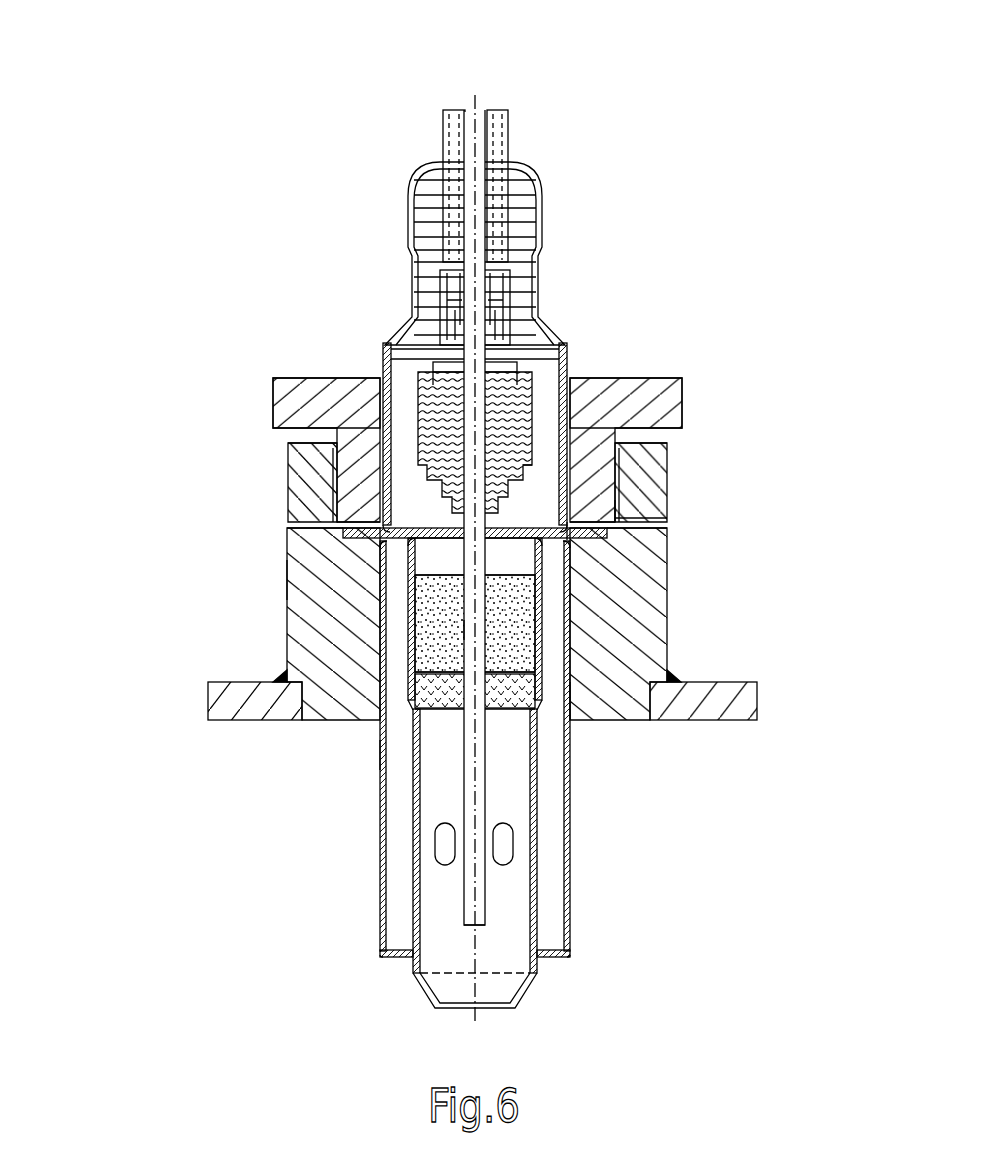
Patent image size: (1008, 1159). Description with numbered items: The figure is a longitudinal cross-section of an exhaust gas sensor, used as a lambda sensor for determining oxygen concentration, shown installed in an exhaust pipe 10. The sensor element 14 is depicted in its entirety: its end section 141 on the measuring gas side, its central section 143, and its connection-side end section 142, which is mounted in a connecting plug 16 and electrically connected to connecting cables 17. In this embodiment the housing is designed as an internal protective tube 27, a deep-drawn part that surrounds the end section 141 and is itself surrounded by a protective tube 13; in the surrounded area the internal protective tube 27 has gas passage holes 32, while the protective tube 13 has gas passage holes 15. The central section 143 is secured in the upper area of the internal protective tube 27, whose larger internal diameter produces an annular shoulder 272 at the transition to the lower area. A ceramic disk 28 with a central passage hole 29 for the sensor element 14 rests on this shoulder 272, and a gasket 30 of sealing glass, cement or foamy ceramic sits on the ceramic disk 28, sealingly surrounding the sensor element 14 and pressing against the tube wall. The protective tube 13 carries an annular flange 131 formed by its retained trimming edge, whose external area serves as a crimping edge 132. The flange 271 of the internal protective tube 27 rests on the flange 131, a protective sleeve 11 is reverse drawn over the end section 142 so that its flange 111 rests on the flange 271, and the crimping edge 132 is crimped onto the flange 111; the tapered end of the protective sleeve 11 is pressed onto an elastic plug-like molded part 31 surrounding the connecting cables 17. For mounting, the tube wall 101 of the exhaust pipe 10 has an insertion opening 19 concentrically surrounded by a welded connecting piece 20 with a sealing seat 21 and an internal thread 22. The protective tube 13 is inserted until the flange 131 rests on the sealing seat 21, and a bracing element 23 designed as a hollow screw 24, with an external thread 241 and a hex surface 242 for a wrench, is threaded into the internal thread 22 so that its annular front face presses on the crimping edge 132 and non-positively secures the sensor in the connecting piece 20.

The exhaust pipe 10 is at (252, 832).
The protective sleeve 11 is at (572, 350).
The protective tube 13 is at (377, 860).
The sensor element 14 is at (487, 802).
The gas passage holes 15 is at (572, 872).
The connecting plug 16 is at (590, 375).
The connecting cables 17 is at (508, 130).
The insertion opening 19 is at (373, 725).
The connecting piece 20 is at (309, 545).
The sealing seat 21 is at (343, 562).
The internal thread 22 is at (320, 496).
The bracing element 23 is at (311, 375).
The hollow screw 24 is at (353, 474).
The internal protective tube 27 is at (572, 777).
The ceramic disk 28 is at (520, 692).
The central passage hole 29 is at (490, 717).
The gasket 30 is at (422, 633).
The elastic plug-like molded part 31 is at (517, 233).
The gas passage holes 32 is at (440, 858).
The tube wall 101 is at (240, 723).
The flange 111 is at (628, 520).
The annular flange 131 is at (600, 543).
The crimping edge 132 is at (618, 507).
The end section 141 is at (478, 907).
The end section 142 is at (530, 427).
The central section 143 is at (478, 630).
The external thread 241 is at (343, 530).
The hex surface 242 is at (302, 400).
The flange 271 is at (607, 540).
The annular shoulder 272 is at (377, 757).